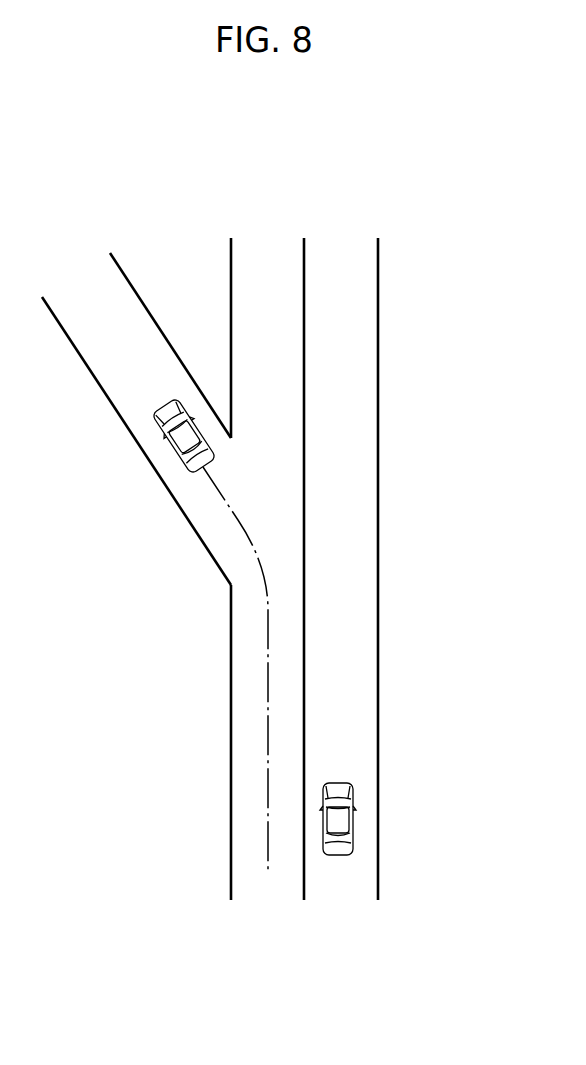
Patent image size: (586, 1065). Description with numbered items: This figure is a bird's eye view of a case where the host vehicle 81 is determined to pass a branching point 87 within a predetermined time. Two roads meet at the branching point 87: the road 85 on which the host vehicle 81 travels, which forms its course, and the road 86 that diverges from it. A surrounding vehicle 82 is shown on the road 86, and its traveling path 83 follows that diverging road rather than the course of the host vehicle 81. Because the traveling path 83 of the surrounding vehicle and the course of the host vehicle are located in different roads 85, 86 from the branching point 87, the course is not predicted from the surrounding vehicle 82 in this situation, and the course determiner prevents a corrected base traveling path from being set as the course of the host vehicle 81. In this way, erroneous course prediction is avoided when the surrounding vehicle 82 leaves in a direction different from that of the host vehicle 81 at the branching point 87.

The host vehicle 81 is at (342, 827).
The surrounding vehicle 82 is at (178, 450).
The traveling path of the surrounding vehicle 83 is at (268, 717).
The road 85 is at (378, 226).
The road 86 is at (132, 411).
The branching point 87 is at (387, 525).